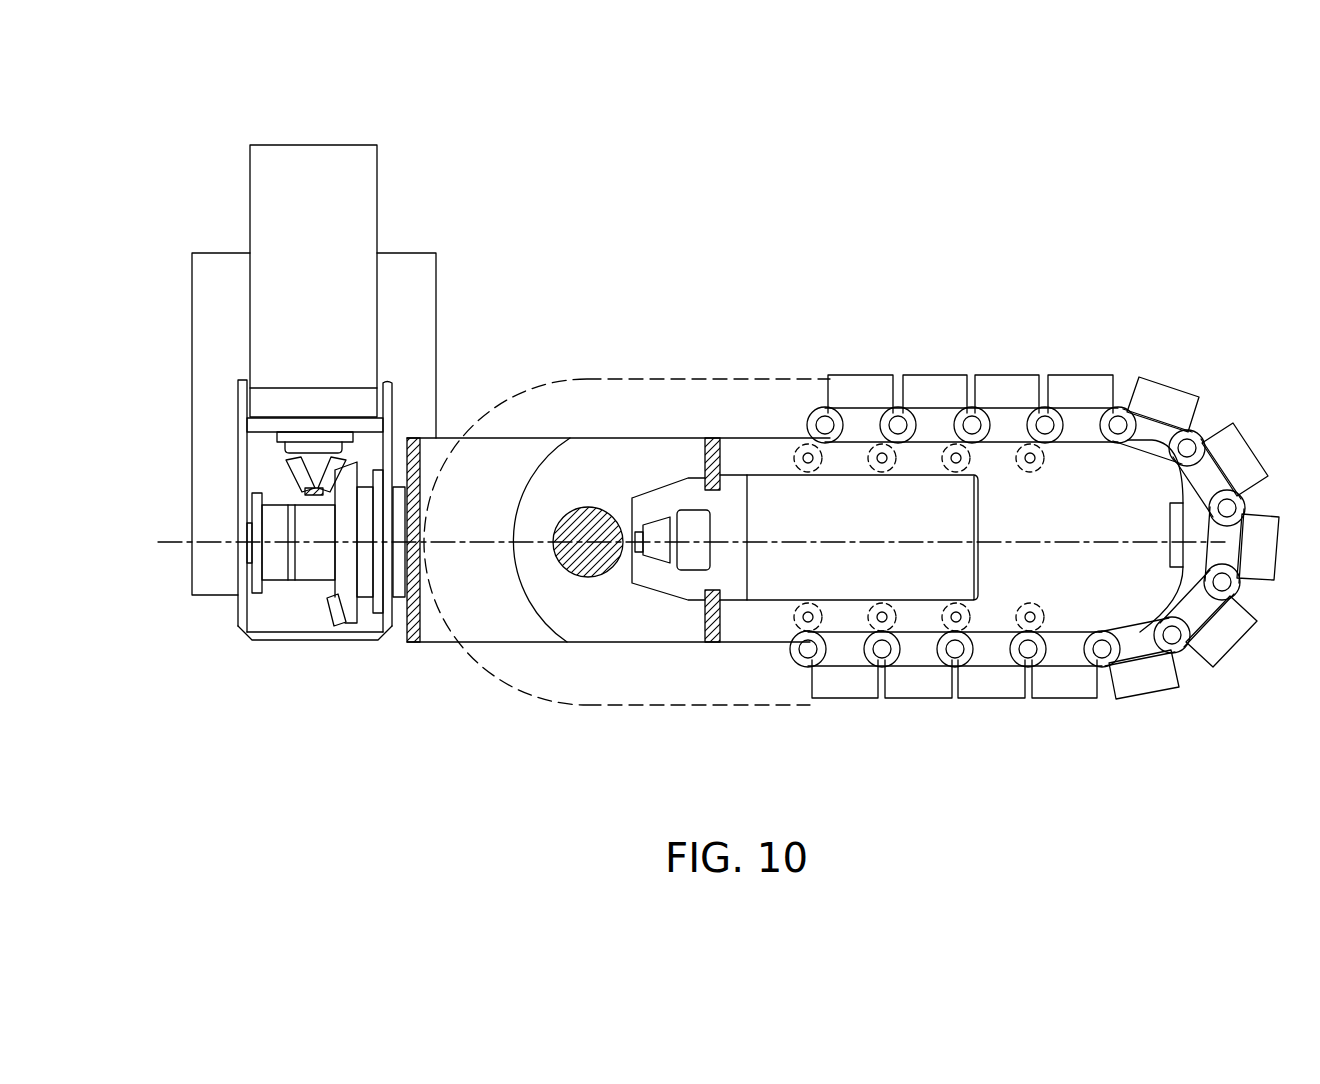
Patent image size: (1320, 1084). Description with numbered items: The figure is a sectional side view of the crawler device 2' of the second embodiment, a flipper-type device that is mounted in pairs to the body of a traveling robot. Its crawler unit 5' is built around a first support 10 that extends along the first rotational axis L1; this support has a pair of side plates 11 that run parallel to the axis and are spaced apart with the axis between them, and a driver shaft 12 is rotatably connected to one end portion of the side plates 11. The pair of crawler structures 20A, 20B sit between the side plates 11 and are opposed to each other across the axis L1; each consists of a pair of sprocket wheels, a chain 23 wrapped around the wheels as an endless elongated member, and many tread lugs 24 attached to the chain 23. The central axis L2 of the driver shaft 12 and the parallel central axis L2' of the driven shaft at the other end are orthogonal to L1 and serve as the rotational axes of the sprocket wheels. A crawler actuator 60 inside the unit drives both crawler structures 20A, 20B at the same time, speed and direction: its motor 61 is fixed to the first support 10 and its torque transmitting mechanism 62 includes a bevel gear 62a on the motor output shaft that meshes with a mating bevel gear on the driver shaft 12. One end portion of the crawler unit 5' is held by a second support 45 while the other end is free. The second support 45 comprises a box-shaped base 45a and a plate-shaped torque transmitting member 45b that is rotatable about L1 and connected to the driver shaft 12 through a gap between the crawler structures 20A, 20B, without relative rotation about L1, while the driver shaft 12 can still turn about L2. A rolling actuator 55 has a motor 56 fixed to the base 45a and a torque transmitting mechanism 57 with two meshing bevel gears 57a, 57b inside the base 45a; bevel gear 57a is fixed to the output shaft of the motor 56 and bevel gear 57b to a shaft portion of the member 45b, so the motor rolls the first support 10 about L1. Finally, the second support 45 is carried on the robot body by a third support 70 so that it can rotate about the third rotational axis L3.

The crawler device 2' is at (629, 201).
The crawler unit 5' is at (1017, 436).
The first support 10 is at (673, 424).
The side plates 11 is at (637, 628).
The driver shaft 12 is at (583, 520).
The crawler structure 20A is at (867, 363).
The crawler structure 20B is at (954, 679).
The chain 23 is at (810, 395).
The tread lugs 24 is at (1085, 387).
The second support 45 is at (255, 646).
The base 45a is at (393, 400).
The torque transmitting member 45b is at (503, 462).
The rolling actuator 55 is at (395, 227).
The motor 56 is at (352, 195).
The torque transmitting mechanism 57 is at (275, 478).
The bevel gear 57a is at (306, 462).
The bevel gear 57b is at (348, 607).
The crawler actuator 60 is at (768, 467).
The motor 61 is at (768, 578).
The torque transmitting mechanism 62 is at (673, 507).
The bevel gear 62a is at (663, 548).
The third support 70 is at (410, 300).
The first rotational axis L1 is at (808, 538).
The second rotational axis L2 is at (581, 659).
The central axis L2' is at (1161, 645).
The third rotational axis L3 is at (315, 544).